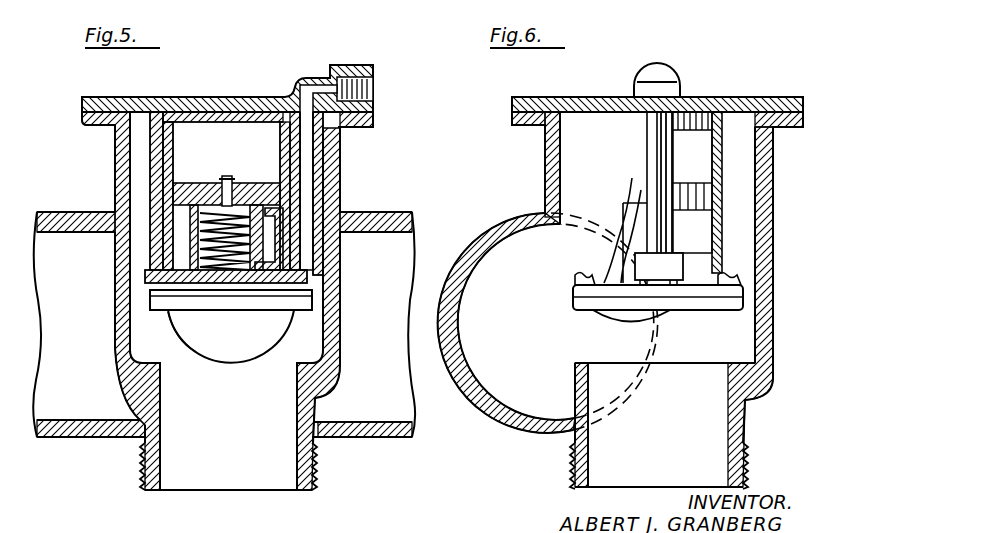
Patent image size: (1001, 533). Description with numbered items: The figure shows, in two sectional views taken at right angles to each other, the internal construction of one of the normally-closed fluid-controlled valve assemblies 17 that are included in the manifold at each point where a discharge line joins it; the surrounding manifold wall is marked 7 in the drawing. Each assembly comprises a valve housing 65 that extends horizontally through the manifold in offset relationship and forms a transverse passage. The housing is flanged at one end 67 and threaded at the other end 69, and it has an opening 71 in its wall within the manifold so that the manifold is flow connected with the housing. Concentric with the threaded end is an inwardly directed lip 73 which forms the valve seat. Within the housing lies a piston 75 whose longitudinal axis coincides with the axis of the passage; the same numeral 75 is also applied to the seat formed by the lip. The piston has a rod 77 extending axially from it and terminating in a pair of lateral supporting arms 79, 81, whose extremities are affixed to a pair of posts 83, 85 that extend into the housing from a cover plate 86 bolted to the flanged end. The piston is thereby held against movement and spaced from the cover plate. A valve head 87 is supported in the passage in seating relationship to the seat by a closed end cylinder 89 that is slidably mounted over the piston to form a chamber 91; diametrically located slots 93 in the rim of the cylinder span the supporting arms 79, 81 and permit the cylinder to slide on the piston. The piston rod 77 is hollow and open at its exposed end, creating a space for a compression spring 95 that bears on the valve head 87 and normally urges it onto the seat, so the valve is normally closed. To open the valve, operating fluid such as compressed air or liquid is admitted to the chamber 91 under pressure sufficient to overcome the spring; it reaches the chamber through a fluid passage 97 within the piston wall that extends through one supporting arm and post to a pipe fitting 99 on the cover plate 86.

In FIG. 5, the valve body 7 is at (56, 462).
In FIG. 6, the valve body 7 is at (476, 250).
In FIG. 5, the fluid-controlled valve assembly 17 is at (238, 397).
In FIG. 6, the fluid-controlled valve assembly 17 is at (696, 345).
In FIG. 5, the valve housing 65 is at (341, 282).
In FIG. 5, the flanged end 67 is at (347, 128).
In FIG. 5, the threaded end 69 is at (314, 463).
In FIG. 6, the threaded end 69 is at (578, 464).
In FIG. 5, the opening 71 is at (190, 320).
In FIG. 6, the inwardly directed lip 73 is at (575, 383).
In FIG. 5, the piston 75 is at (240, 200).
In FIG. 6, the piston 75 is at (637, 208).
In FIG. 5, the rod 77 is at (192, 230).
In FIG. 6, the rod 77 is at (684, 238).
In FIG. 5, the lateral supporting arm 79 is at (178, 277).
In FIG. 6, the lateral supporting arm 79 is at (681, 281).
In FIG. 5, the lateral supporting arm 81 is at (300, 291).
In FIG. 5, the post 83 is at (150, 178).
In FIG. 6, the post 83 is at (652, 149).
In FIG. 5, the post 85 is at (315, 179).
In FIG. 5, the cover plate 86 is at (148, 97).
In FIG. 6, the cover plate 86 is at (576, 97).
In FIG. 5, the valve head 87 is at (176, 328).
In FIG. 6, the valve head 87 is at (640, 313).
In FIG. 5, the closed end cylinder 89 is at (174, 143).
In FIG. 6, the closed end cylinder 89 is at (722, 176).
In FIG. 5, the chamber 91 is at (240, 158).
In FIG. 6, the chamber 91 is at (701, 161).
In FIG. 5, the slots 93 is at (172, 222).
In FIG. 5, the compression spring 95 is at (218, 196).
In FIG. 5, the fluid passage 97 is at (305, 202).
In FIG. 5, the pipe fitting 99 is at (373, 84).
In FIG. 6, the pipe fitting 99 is at (681, 79).